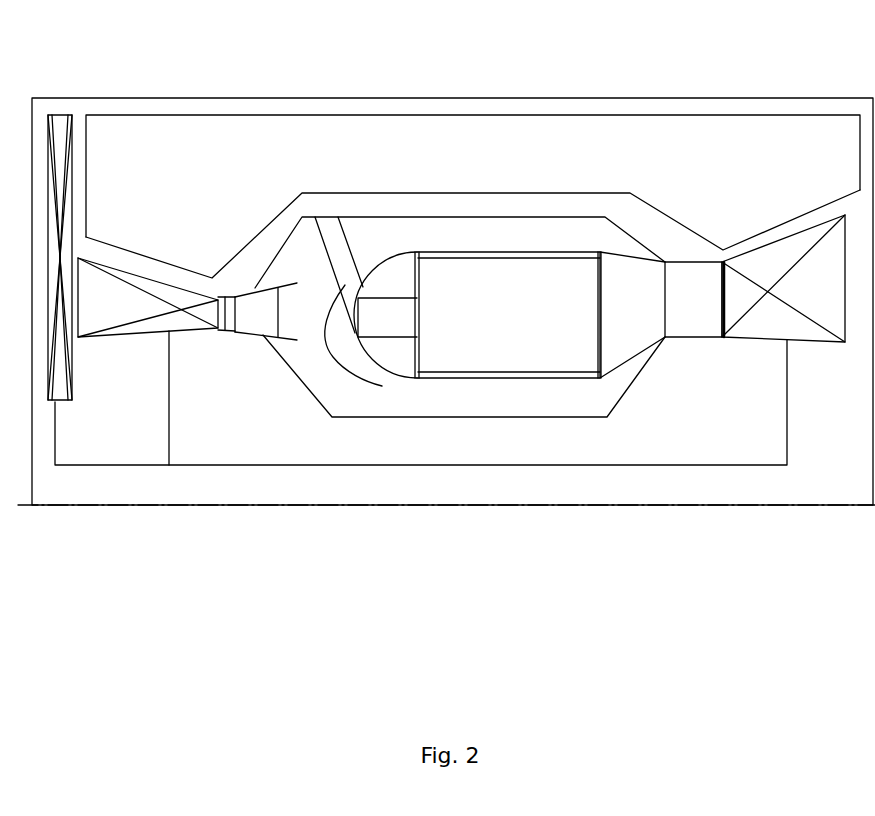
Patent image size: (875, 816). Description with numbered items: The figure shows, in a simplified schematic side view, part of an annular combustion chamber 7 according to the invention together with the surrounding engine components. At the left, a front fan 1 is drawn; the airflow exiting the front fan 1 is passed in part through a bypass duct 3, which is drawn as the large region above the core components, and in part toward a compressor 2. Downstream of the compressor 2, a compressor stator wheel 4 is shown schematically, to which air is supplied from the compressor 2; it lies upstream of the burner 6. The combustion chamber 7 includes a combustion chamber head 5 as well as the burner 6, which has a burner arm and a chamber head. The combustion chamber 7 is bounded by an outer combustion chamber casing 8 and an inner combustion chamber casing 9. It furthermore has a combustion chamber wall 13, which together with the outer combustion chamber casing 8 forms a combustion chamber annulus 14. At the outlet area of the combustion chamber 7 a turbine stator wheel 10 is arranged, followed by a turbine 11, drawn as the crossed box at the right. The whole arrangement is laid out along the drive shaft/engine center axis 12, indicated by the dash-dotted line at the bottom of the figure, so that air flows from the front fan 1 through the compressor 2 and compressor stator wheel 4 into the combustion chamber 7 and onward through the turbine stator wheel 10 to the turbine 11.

The front fan 1 is at (58, 147).
The compressor 2 is at (133, 297).
The bypass duct 3 is at (218, 167).
The compressor stator wheel 4 is at (262, 318).
The combustion chamber head 5 is at (382, 263).
The burner 6 is at (388, 320).
The annular combustion chamber 7 is at (472, 320).
The outer combustion chamber casing 8 is at (562, 217).
The inner combustion chamber casing 9 is at (478, 422).
The turbine stator wheel 10 is at (688, 317).
The turbine 11 is at (792, 290).
The drive shaft/engine center axis 12 is at (100, 505).
The combustion chamber wall 13 is at (515, 252).
The combustion chamber annulus 14 is at (430, 242).